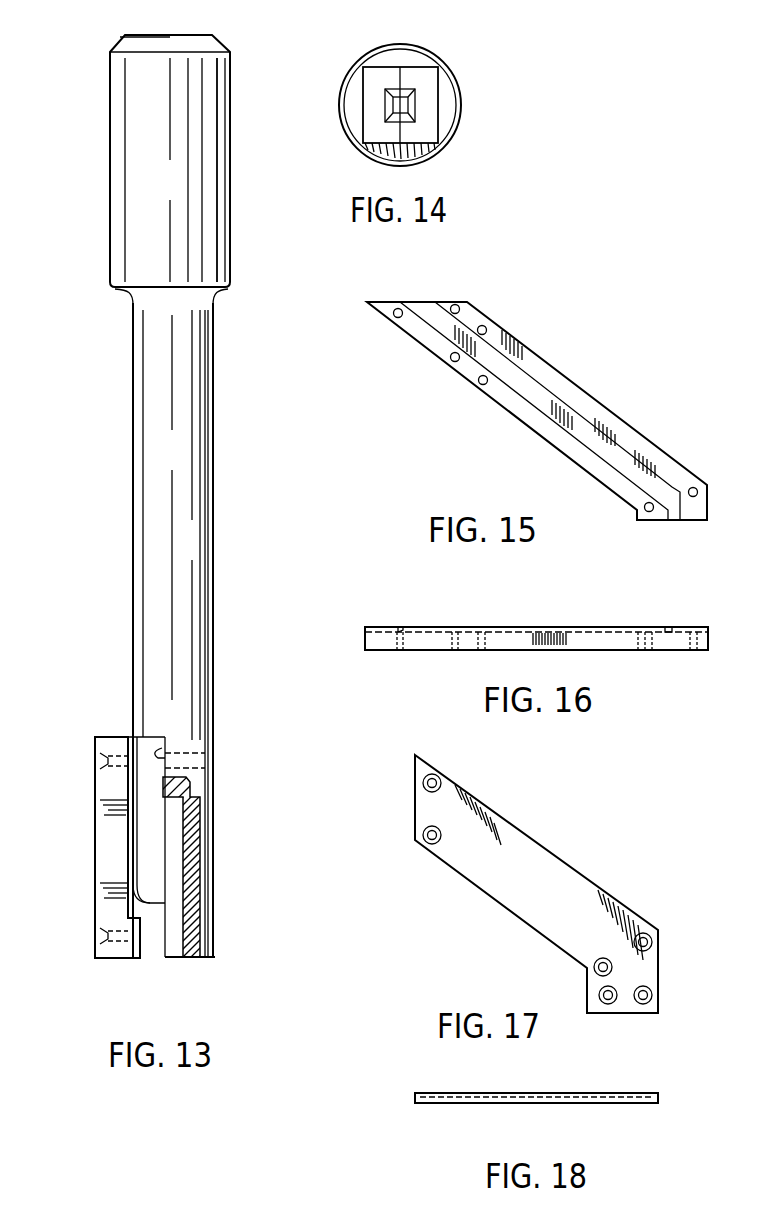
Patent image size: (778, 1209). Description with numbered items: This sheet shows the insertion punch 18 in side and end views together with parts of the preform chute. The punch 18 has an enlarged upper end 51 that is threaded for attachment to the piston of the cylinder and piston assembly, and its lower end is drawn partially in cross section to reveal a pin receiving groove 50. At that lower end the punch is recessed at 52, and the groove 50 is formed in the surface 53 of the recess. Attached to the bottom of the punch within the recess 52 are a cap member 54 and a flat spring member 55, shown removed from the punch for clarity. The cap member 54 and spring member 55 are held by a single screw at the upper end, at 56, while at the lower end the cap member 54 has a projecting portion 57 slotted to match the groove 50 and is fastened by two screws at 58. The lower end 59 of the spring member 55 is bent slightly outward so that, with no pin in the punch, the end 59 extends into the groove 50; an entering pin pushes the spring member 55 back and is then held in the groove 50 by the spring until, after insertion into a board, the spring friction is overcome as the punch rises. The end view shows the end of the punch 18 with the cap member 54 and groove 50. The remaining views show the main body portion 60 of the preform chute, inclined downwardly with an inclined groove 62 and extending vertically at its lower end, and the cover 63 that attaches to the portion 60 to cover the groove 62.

In FIG. 13, the punch 18 is at (215, 562).
In FIG. 14, the punch 18 is at (430, 93).
In FIG. 13, the pin receiving groove 50 is at (177, 918).
In FIG. 14, the pin receiving groove 50 is at (405, 97).
In FIG. 13, the enlarged upper end 51 is at (112, 198).
In FIG. 14, the enlarged upper end 51 is at (455, 72).
In FIG. 13, the recess 52 is at (147, 745).
In FIG. 13, the surface of the recess 53 is at (160, 750).
In FIG. 13, the cap member 54 is at (102, 836).
In FIG. 14, the cap member 54 is at (368, 77).
In FIG. 13, the flat spring member 55 is at (136, 855).
In FIG. 13, the single screw attachment 56 is at (95, 762).
In FIG. 13, the projecting portion 57 is at (142, 958).
In FIG. 13, the two screws attachment 58 is at (95, 938).
In FIG. 13, the lower end of spring member 59 is at (142, 903).
In FIG. 15, the main body portion 60 is at (556, 378).
In FIG. 16, the main body portion 60 is at (510, 628).
In FIG. 15, the inclined groove 62 is at (578, 423).
In FIG. 16, the inclined groove 62 is at (432, 627).
In FIG. 17, the cover 63 is at (555, 865).
In FIG. 18, the cover 63 is at (520, 1105).